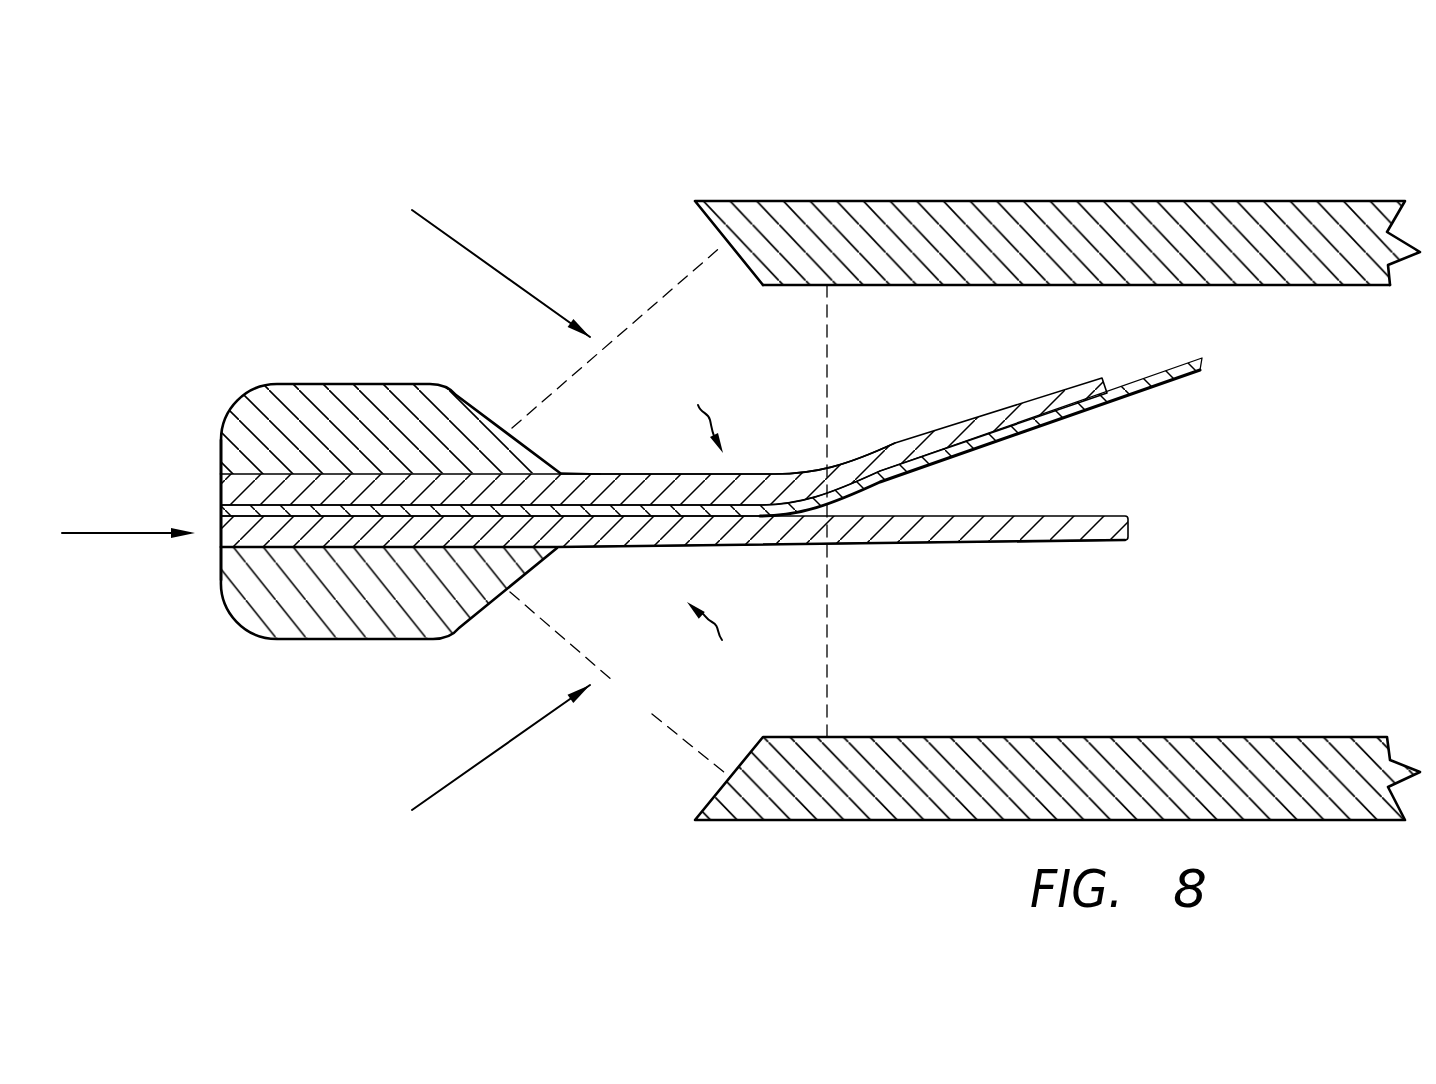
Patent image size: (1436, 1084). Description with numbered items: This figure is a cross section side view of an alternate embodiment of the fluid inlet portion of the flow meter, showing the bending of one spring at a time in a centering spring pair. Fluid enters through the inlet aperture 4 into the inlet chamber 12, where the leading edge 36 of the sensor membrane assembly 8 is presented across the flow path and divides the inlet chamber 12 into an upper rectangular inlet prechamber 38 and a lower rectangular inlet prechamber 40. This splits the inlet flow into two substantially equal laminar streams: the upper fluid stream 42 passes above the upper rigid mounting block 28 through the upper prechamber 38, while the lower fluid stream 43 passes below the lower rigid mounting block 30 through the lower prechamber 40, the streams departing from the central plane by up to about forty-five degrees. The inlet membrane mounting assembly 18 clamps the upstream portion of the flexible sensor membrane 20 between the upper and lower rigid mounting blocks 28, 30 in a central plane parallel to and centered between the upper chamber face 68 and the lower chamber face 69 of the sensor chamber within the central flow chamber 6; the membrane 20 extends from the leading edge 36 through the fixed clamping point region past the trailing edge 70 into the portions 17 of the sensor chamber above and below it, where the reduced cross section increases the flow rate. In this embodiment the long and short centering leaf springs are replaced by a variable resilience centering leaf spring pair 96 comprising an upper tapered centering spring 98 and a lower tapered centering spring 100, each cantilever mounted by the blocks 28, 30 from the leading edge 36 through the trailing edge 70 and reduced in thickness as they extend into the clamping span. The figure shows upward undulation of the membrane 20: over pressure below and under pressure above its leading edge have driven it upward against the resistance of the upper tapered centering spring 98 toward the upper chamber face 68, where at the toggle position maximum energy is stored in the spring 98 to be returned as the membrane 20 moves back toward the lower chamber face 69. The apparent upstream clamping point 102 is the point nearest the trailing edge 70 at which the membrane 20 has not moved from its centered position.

The inlet aperture 4 is at (113, 533).
The central flow chamber 6 is at (1148, 200).
The sensor membrane assembly 8 is at (709, 640).
The inlet chamber 12 is at (275, 290).
The portions of sensor chamber 17 is at (827, 342).
The inlet membrane mounting assembly 18 is at (705, 416).
The flexible sensor membrane 20 is at (1153, 392).
The upper rigid mounting block 28 is at (447, 386).
The lower rigid mounting block 30 is at (447, 637).
The leading edge 36 is at (218, 448).
The upper rectangular inlet prechamber 38 is at (617, 336).
The lower rectangular inlet prechamber 40 is at (620, 684).
The upper fluid stream 42 is at (491, 262).
The lower fluid stream 43 is at (492, 755).
The upper chamber face 68 is at (1090, 287).
The lower chamber face 69 is at (1063, 737).
The trailing edge 70 is at (560, 472).
The variable resilience centering leaf spring pair 96 is at (213, 533).
The upper tapered centering spring 98 is at (1040, 396).
The lower tapered centering spring 100 is at (1058, 541).
The apparent upstream clamping point 102 is at (797, 472).